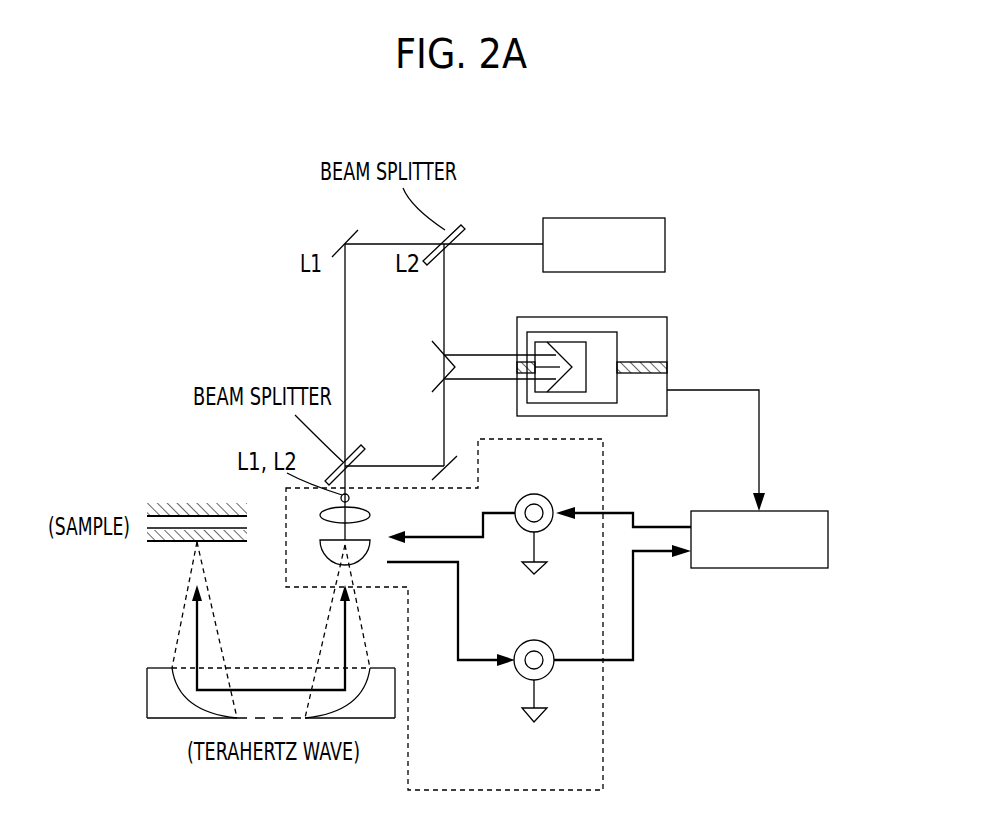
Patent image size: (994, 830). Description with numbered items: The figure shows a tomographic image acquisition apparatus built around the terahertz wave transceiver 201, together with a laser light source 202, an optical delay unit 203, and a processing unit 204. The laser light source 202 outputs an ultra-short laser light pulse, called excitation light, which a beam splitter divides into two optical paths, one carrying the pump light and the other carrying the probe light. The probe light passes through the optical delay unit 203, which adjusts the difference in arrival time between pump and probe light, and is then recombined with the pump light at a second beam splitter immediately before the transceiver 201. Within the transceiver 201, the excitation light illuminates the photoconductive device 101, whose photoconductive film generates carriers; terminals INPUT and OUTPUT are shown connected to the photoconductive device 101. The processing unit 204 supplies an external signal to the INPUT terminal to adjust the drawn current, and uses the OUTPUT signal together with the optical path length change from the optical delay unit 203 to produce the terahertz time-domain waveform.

The photoconductive device 101 is at (333, 538).
The terahertz wave transceiver 201 is at (603, 773).
The laser light source 202 is at (620, 218).
The optical delay unit 203 is at (590, 340).
The processing unit 204 is at (782, 511).